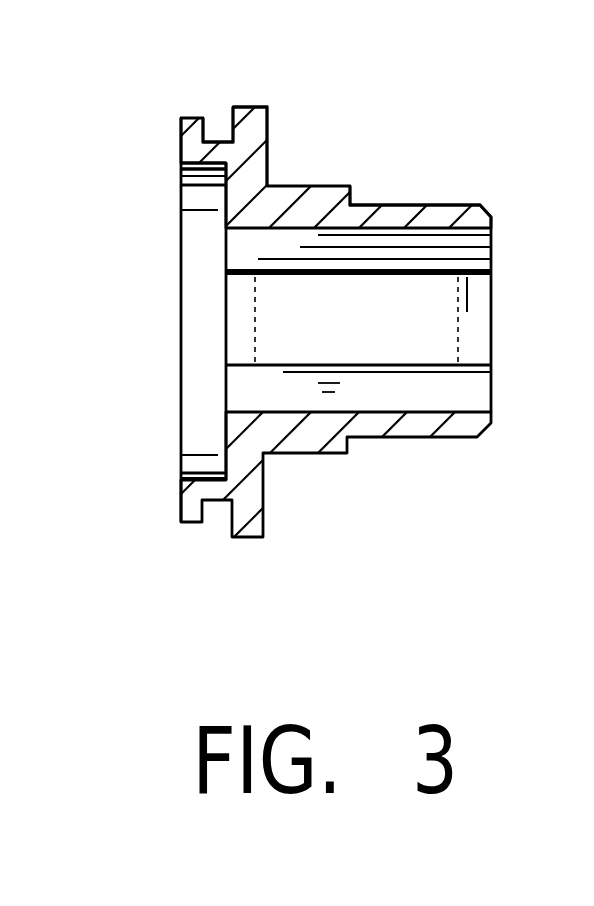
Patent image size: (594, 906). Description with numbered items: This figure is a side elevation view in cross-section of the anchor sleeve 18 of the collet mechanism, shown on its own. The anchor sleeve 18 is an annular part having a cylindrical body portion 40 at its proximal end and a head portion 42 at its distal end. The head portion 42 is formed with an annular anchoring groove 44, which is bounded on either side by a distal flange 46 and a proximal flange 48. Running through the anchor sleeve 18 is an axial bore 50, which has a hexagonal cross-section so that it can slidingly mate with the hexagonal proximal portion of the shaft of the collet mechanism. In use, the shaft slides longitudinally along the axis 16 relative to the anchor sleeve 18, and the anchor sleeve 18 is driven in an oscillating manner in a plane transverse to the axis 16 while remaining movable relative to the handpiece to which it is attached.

The axis 16 is at (257, 167).
The anchor sleeve 18 is at (308, 465).
The cylindrical body portion 40 is at (456, 170).
The head portion 42 is at (175, 112).
The annular anchoring groove 44 is at (216, 128).
The distal flange 46 is at (188, 147).
The proximal flange 48 is at (263, 113).
The axial bore 50 is at (510, 362).